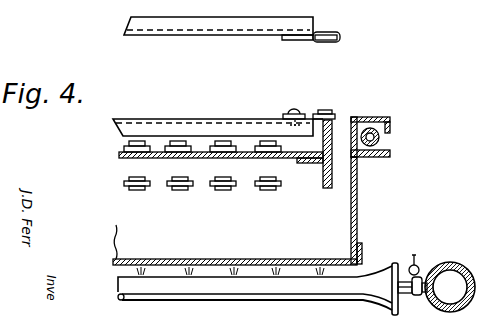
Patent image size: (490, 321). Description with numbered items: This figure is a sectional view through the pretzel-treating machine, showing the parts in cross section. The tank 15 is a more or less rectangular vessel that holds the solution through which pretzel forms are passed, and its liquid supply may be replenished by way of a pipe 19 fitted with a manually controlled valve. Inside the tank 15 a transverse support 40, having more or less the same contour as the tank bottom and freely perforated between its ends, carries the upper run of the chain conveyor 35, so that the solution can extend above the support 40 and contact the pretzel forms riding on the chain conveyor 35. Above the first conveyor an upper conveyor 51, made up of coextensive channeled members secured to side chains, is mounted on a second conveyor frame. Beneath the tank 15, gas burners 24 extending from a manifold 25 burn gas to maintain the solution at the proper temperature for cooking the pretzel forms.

The upper conveyor 51 is at (268, 25).
The transverse support 40 is at (281, 158).
The chain conveyor 35 is at (233, 207).
The pipe 19 is at (383, 140).
The tank 15 is at (358, 217).
The gas burners 24 is at (250, 290).
The manifold 25 is at (455, 264).